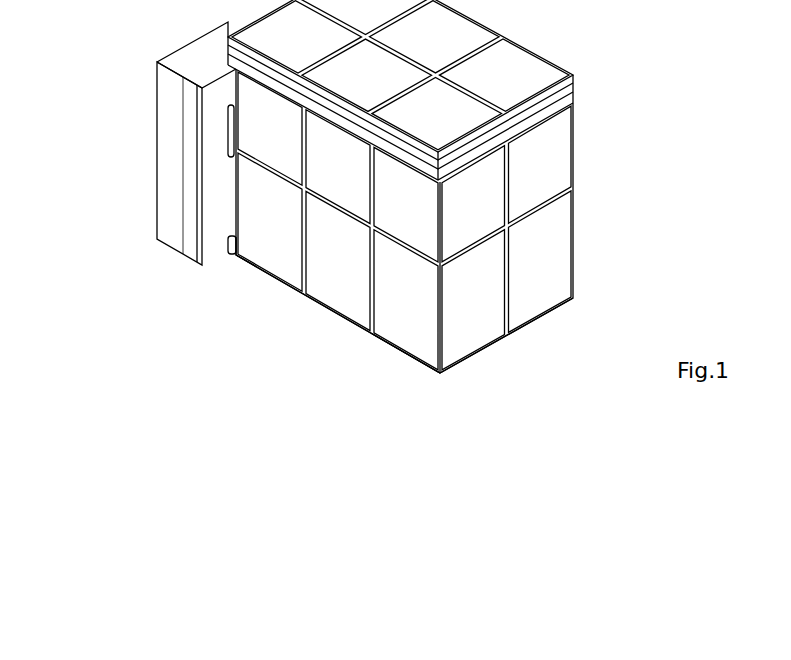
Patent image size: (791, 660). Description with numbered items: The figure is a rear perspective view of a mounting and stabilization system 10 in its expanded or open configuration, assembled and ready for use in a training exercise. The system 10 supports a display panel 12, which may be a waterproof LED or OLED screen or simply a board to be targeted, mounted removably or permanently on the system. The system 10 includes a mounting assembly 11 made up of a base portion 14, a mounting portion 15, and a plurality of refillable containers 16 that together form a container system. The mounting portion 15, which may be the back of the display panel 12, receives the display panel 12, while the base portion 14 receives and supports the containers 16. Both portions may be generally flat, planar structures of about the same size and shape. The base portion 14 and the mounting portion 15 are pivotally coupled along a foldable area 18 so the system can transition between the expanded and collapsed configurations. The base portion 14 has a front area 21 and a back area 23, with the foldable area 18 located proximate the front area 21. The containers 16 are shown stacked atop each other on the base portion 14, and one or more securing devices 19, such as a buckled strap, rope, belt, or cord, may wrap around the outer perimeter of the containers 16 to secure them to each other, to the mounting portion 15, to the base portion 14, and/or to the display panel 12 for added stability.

The mounting and stabilization system 10 is at (127, 35).
The mounting assembly 11 is at (307, 297).
The display panel 12 is at (190, 247).
The base portion 14 is at (377, 340).
The mounting portion 15 is at (228, 152).
The refillable containers 16 is at (560, 257).
The foldable area 18 is at (230, 254).
The securing device 19 is at (572, 97).
The front area 21 is at (240, 260).
The back area 23 is at (410, 356).